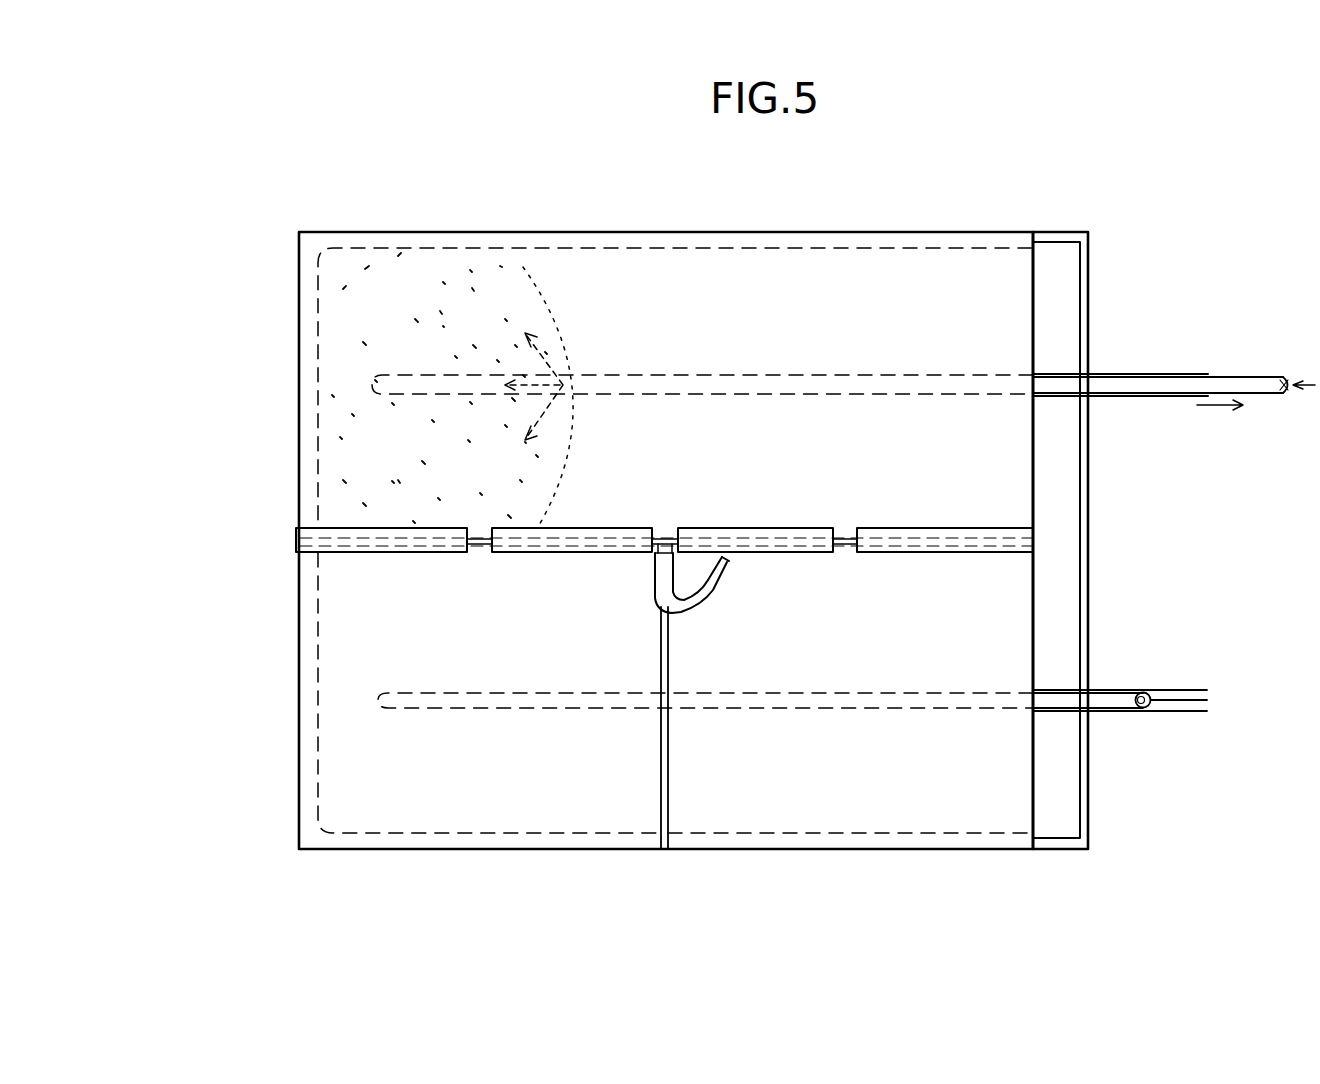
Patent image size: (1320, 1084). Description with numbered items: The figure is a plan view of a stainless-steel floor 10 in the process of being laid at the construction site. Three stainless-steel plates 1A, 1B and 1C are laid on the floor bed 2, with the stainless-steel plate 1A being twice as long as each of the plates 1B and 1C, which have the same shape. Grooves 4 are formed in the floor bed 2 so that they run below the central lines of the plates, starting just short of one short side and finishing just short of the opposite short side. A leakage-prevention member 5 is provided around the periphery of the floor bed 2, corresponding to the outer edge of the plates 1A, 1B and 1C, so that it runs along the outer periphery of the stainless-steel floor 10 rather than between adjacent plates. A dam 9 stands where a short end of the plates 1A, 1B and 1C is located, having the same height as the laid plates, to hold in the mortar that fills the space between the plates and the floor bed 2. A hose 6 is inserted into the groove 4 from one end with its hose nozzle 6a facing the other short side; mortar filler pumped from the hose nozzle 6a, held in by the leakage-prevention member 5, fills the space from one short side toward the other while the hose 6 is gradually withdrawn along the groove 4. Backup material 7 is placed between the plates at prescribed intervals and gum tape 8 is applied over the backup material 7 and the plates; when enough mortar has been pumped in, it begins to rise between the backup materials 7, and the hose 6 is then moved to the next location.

The stainless-steel floor 10 is at (240, 305).
The stainless-steel plate 1A is at (805, 293).
The stainless-steel plate 1B is at (742, 788).
The stainless-steel plate 1C is at (545, 782).
The floor bed 2 is at (268, 682).
The groove 4 is at (1115, 377).
The leakage-prevention member 5 is at (310, 485).
The hose 6 is at (1260, 382).
The hose nozzle 6a is at (590, 386).
The backup material 7 is at (597, 540).
The gum tape 8 is at (937, 530).
The dam 9 is at (1085, 499).